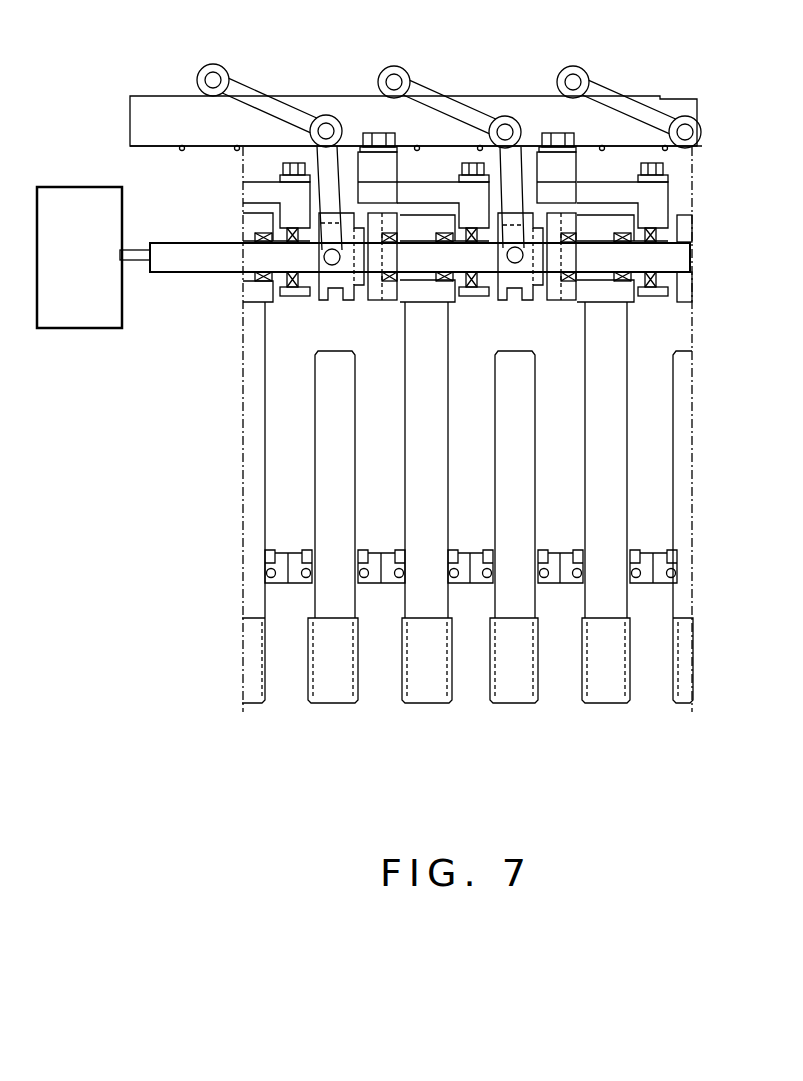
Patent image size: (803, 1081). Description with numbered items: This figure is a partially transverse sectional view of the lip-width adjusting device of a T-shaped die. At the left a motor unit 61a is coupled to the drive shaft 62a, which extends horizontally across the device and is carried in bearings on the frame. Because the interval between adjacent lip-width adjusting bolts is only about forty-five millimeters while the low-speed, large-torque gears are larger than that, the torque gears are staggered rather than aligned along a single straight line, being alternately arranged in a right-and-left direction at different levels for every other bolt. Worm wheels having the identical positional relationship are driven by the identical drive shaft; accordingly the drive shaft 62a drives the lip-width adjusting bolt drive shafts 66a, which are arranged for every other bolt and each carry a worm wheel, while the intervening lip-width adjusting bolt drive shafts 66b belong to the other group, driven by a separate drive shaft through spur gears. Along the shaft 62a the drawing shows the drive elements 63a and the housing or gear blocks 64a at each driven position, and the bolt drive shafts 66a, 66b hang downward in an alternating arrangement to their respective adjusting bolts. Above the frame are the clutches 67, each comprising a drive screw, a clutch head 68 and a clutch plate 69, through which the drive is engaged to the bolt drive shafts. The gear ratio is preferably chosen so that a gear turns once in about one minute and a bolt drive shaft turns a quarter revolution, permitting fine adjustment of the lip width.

The motor 61a is at (87, 322).
The drive shaft 62a is at (258, 260).
The eccentric cam 63a is at (325, 287).
The bearing block 64a is at (395, 290).
The lip-width adjusting bolt drive shafts 66a is at (430, 686).
The lip-width adjusting bolt drive shafts 66b is at (340, 690).
The clutches 67 is at (278, 100).
The clutch heads 68 is at (213, 63).
The clutch plates 69 is at (157, 123).